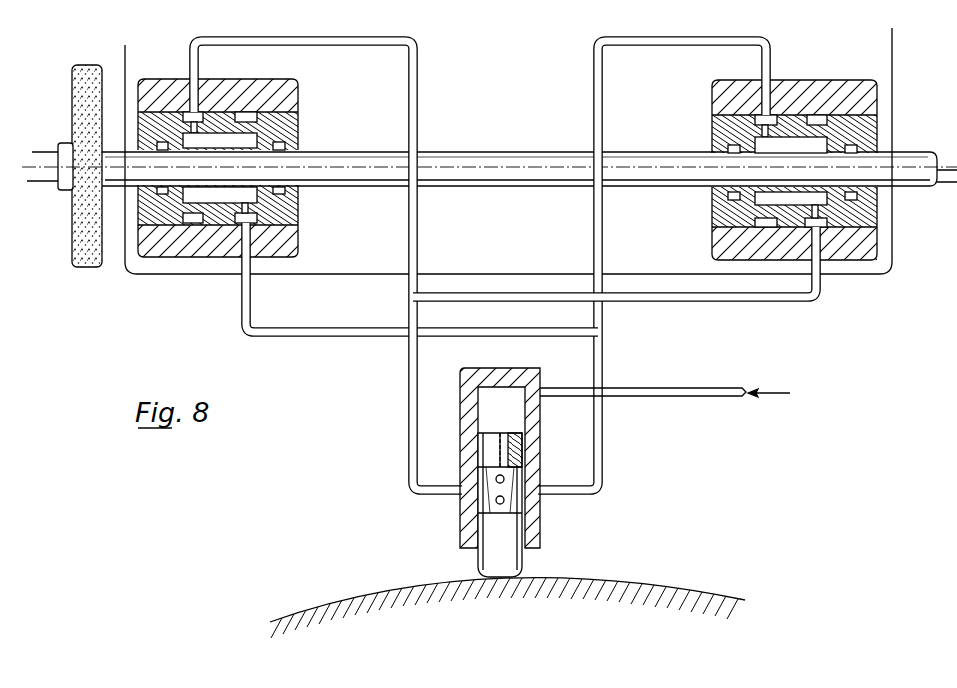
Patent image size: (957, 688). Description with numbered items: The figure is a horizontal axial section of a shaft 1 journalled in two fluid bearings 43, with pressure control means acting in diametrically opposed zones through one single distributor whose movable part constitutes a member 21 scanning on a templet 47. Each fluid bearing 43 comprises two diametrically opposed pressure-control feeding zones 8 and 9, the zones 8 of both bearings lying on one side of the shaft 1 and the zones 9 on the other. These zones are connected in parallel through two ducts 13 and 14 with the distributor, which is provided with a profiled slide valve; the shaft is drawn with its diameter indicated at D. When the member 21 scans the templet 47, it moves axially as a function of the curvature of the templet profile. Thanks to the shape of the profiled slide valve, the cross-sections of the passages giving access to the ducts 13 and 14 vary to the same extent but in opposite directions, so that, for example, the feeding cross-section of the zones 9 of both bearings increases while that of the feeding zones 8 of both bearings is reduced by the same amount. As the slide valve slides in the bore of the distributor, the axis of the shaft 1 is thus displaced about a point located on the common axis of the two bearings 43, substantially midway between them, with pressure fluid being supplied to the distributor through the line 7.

The shaft 1 is at (474, 160).
The spindle diameter D is at (509, 173).
The pressure fluid supply line 7 is at (706, 393).
The pressure-control feeding zone 8 is at (507, 169).
The pressure-control feeding zone 9 is at (507, 169).
The duct 13 is at (357, 33).
The duct 14 is at (707, 41).
The scanning member 21 is at (518, 556).
The fluid bearing 43 is at (297, 134).
The templet 47 is at (641, 593).